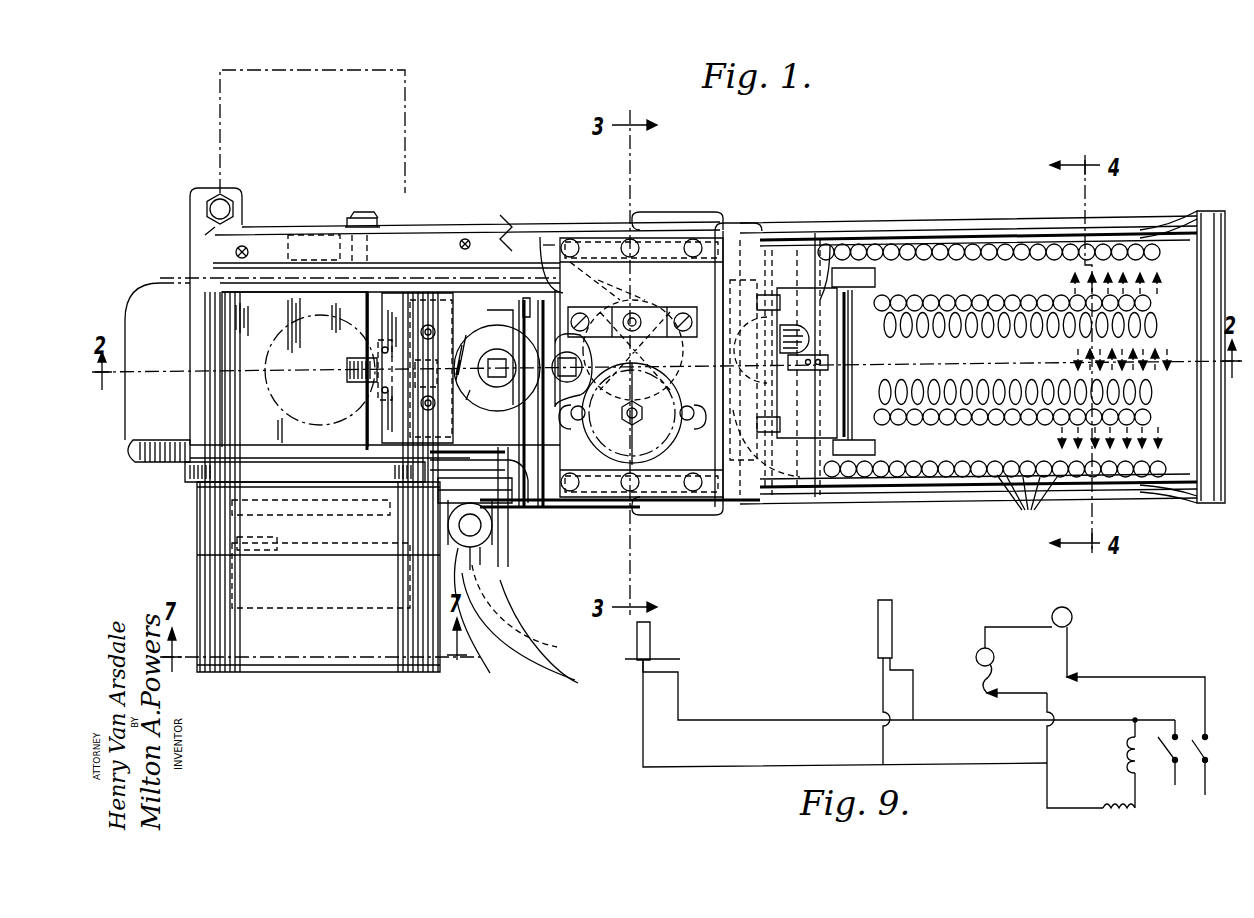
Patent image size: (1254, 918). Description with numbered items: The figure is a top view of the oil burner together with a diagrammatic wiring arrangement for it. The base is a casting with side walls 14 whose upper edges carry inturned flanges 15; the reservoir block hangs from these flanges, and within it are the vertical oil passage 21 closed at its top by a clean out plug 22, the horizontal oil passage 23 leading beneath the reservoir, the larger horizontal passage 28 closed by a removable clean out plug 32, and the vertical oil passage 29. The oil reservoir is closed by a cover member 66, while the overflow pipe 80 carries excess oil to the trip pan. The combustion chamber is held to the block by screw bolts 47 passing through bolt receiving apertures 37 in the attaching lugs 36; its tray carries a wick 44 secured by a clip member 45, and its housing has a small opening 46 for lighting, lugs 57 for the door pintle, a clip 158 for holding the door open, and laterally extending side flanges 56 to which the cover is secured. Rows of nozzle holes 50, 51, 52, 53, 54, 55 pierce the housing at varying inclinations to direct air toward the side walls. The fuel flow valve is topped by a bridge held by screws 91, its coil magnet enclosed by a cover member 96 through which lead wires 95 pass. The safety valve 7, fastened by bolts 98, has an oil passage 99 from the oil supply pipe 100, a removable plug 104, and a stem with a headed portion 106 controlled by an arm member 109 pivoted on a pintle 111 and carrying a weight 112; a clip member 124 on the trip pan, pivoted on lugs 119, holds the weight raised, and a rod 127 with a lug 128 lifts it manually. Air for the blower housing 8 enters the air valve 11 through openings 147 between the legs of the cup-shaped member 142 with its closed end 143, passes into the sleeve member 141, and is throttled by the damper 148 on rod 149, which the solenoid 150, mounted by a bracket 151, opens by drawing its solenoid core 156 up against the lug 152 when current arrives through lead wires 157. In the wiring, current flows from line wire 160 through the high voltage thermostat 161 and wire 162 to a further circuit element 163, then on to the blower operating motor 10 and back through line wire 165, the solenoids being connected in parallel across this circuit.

In FIG. 1, the blower operating motor 10 is at (405, 85).
In FIG. 9, the blower operating motor 10 is at (1125, 763).
In FIG. 1, the side walls 14 is at (320, 228).
In FIG. 1, the inturned flanges 15 is at (240, 240).
In FIG. 1, the blower housing 8 is at (140, 455).
In FIG. 1, the air valve 11 is at (352, 660).
In FIG. 1, the safety valve 7 is at (538, 360).
In FIG. 1, the vertical oil passage 21 is at (566, 348).
In FIG. 1, the clean out plug 22 is at (607, 278).
In FIG. 1, the horizontal oil passage 23 is at (603, 480).
In FIG. 1, the horizontal passage 28 is at (588, 255).
In FIG. 1, the vertical oil passage 29 is at (740, 440).
In FIG. 1, the clean out plug 32 is at (523, 240).
In FIG. 1, the attaching lugs 36 is at (777, 325).
In FIG. 1, the bolt receiving apertures 37 is at (740, 228).
In FIG. 1, the wick 44 is at (900, 332).
In FIG. 1, the clip member 45 is at (820, 245).
In FIG. 1, the small opening 46 is at (900, 305).
In FIG. 1, the screw bolts 47 is at (775, 240).
In FIG. 1, the outside row of holes 50 is at (1027, 505).
In FIG. 1, the outside row of holes 51 is at (1040, 250).
In FIG. 1, the row of holes 52 is at (995, 453).
In FIG. 1, the row of holes 53 is at (1050, 305).
In FIG. 1, the row of holes 54 is at (1065, 397).
In FIG. 1, the row of holes 55 is at (1100, 335).
In FIG. 1, the side flanges 56 is at (960, 230).
In FIG. 1, the lugs 57 is at (858, 268).
In FIG. 1, the cover member 66 is at (632, 414).
In FIG. 1, the overflow pipe 80 is at (512, 505).
In FIG. 1, the screws 91 is at (680, 300).
In FIG. 1, the lead wires 95 is at (633, 354).
In FIG. 9, the lead wires 95 is at (892, 623).
In FIG. 1, the cover member 96 is at (640, 310).
In FIG. 1, the bolts 98 is at (565, 245).
In FIG. 1, the oil passage 99 is at (490, 352).
In FIG. 1, the oil supply pipe 100 is at (500, 558).
In FIG. 1, the removable plug 104 is at (545, 300).
In FIG. 1, the headed portion 106 is at (417, 368).
In FIG. 1, the arm member 109 is at (520, 300).
In FIG. 1, the pintle 111 is at (508, 300).
In FIG. 1, the weight 112 is at (405, 290).
In FIG. 1, the lugs 119 is at (430, 260).
In FIG. 1, the clip member 124 is at (378, 400).
In FIG. 1, the rod 127 is at (360, 300).
In FIG. 1, the lug 128 is at (350, 378).
In FIG. 1, the sleeve member 141 is at (313, 608).
In FIG. 1, the cup-shaped member 142 is at (195, 672).
In FIG. 1, the closed end 143 is at (410, 672).
In FIG. 1, the openings 147 is at (240, 492).
In FIG. 1, the damper 148 is at (325, 550).
In FIG. 1, the rod 149 is at (485, 619).
In FIG. 1, the solenoid 150 is at (520, 595).
In FIG. 1, the bracket 151 is at (311, 516).
In FIG. 1, the lug 152 is at (537, 613).
In FIG. 1, the solenoid core 156 is at (495, 530).
In FIG. 1, the lead wires 157 is at (559, 640).
In FIG. 9, the lead wires 157 is at (646, 645).
In FIG. 1, the clip 158 is at (912, 385).
In FIG. 9, the line wire 160 is at (1205, 700).
In FIG. 9, the high voltage thermostat 161 is at (1067, 652).
In FIG. 9, the wire 162 is at (1030, 627).
In FIG. 9, the contact 163 is at (975, 680).
In FIG. 9, the line wire 165 is at (1068, 723).